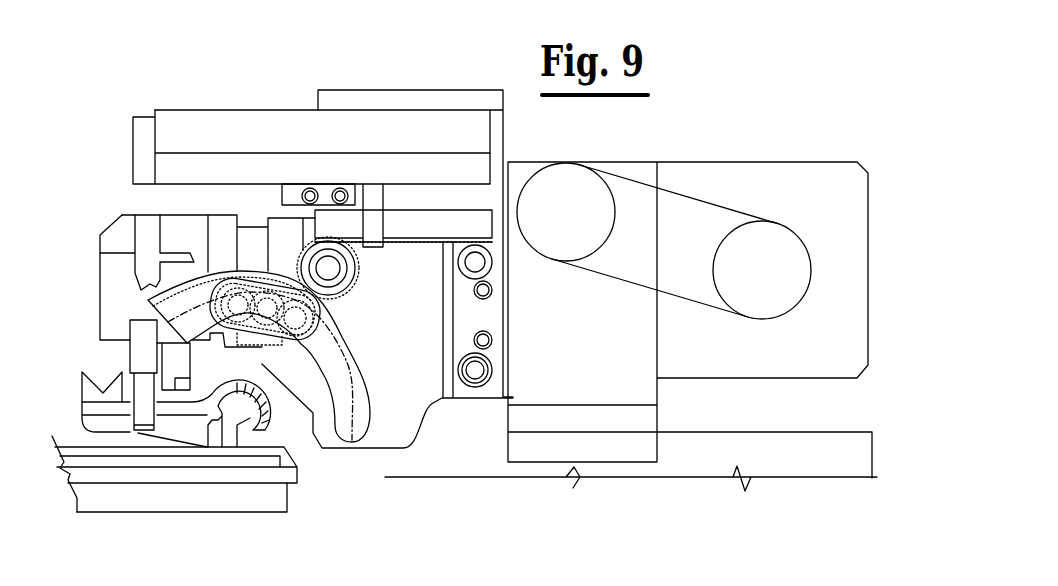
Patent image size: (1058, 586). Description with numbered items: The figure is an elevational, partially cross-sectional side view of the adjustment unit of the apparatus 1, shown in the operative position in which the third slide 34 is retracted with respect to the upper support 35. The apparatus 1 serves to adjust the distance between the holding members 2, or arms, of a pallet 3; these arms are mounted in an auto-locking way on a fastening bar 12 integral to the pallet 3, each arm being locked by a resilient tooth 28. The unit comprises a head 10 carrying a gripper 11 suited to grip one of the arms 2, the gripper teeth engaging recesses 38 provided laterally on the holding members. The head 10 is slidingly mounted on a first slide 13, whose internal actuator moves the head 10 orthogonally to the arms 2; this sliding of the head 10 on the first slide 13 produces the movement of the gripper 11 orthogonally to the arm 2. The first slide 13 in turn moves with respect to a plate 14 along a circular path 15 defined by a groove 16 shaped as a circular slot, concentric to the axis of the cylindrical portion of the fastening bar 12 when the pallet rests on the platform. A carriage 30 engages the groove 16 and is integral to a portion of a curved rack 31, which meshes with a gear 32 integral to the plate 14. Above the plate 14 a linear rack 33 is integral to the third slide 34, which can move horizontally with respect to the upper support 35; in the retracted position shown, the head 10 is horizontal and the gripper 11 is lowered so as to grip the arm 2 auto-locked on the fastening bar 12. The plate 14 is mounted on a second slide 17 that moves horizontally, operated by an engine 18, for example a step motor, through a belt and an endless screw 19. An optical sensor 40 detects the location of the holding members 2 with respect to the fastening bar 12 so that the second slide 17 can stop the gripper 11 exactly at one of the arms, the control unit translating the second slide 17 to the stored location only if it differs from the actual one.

The apparatus 1 is at (635, 126).
The holding members 2 is at (178, 437).
The pallet 3 is at (273, 502).
The head 10 is at (117, 235).
The gripper 11 is at (133, 367).
The fastening bar 12 is at (228, 430).
The first slide 13 is at (255, 232).
The plate 14 is at (140, 262).
The path 15 is at (352, 444).
The groove 16 is at (400, 382).
The second slide 17 is at (457, 388).
The engine 18 is at (755, 250).
The endless screw 19 is at (480, 380).
The resilient tooth 28 is at (213, 448).
The carriage 30 is at (240, 278).
The curved rack 31 is at (180, 280).
The gear 32 is at (317, 245).
The linear rack 33 is at (357, 233).
The third slide 34 is at (407, 170).
The upper support 35 is at (455, 127).
The recesses 38 is at (138, 435).
The optical sensor 40 is at (180, 385).